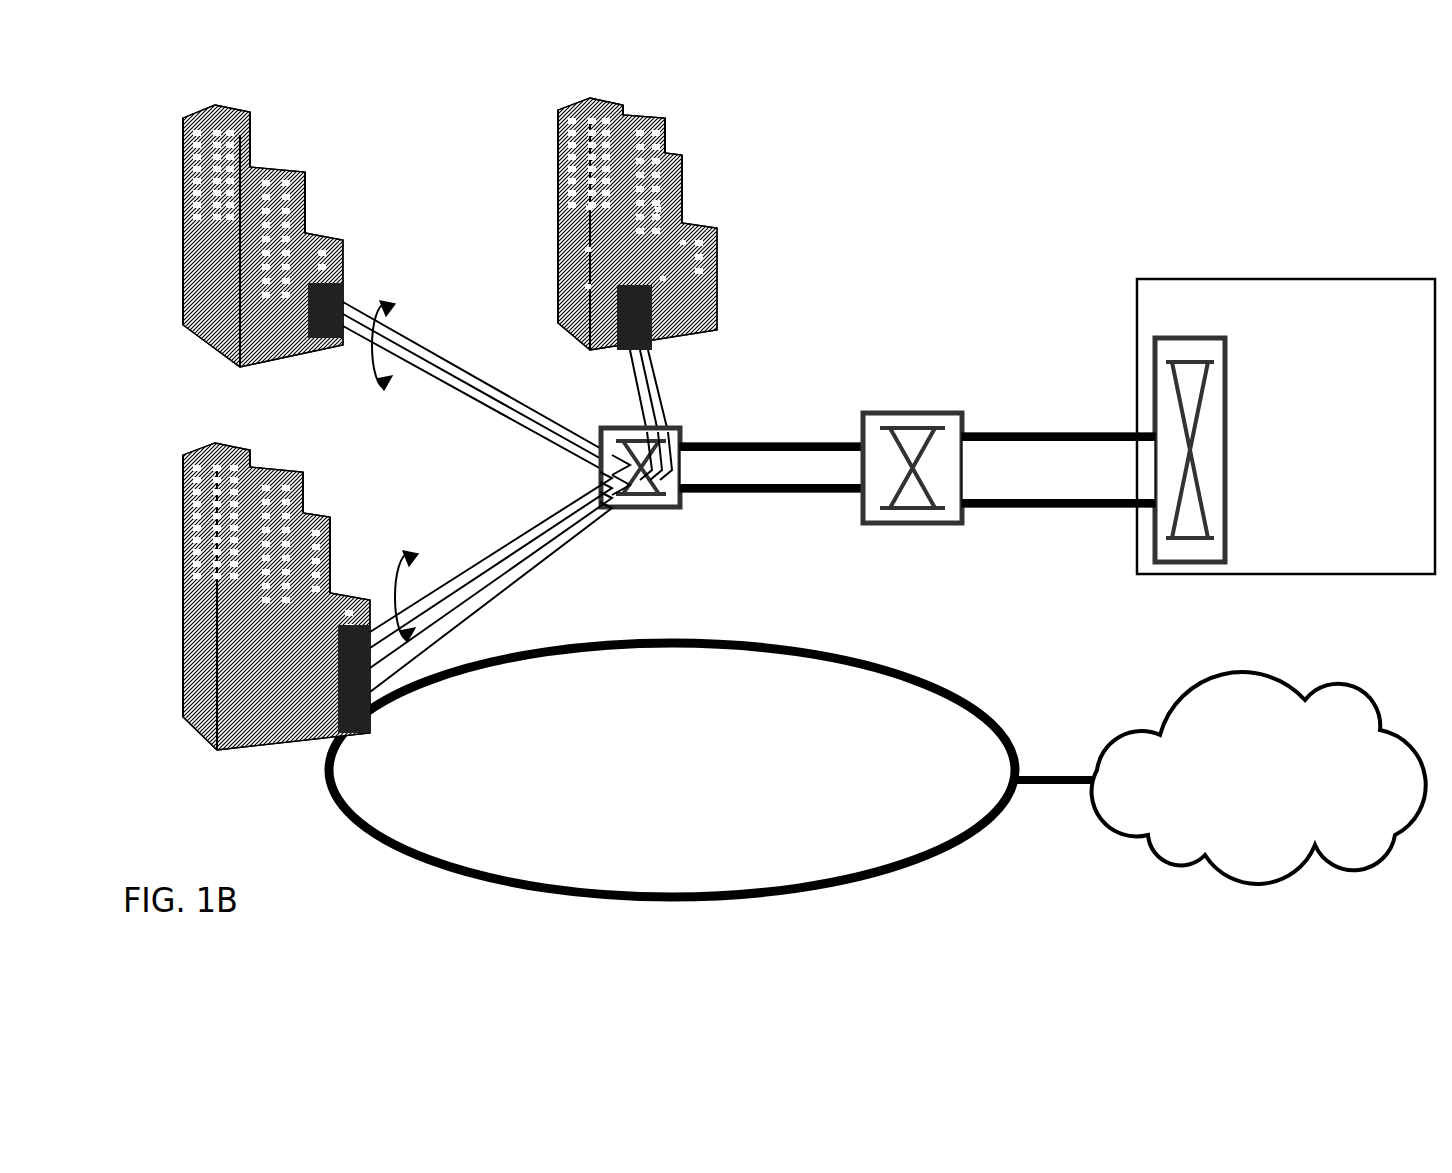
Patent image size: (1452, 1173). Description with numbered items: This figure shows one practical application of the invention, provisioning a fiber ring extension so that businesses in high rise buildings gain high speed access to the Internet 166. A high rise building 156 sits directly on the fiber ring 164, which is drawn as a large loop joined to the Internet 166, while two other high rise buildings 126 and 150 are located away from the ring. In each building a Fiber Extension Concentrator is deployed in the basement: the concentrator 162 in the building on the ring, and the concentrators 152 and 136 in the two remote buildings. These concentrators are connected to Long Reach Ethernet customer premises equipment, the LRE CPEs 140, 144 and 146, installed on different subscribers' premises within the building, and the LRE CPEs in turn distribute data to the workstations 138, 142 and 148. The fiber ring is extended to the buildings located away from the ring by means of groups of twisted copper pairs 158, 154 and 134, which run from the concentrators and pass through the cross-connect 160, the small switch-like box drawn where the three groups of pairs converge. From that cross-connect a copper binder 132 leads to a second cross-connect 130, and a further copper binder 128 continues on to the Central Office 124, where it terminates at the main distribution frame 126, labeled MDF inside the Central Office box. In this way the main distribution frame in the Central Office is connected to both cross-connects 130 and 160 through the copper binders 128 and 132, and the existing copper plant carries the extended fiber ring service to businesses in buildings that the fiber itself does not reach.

The Central Office 124 is at (1255, 282).
The high rise building / main distribution frame (MDF) 126 is at (647, 132).
The copper binder 128 is at (1002, 460).
The cross-connect 130 is at (905, 440).
The copper binder 132 is at (752, 467).
The group of twisted copper pairs 134 is at (650, 392).
The Fiber Extension Concentrator 136 is at (648, 320).
The workstation 138 is at (662, 278).
The LRE CPE 140 is at (588, 287).
The workstation 142 is at (683, 243).
The LRE CPE 144 is at (588, 250).
The LRE CPE 146 is at (590, 208).
The workstation 148 is at (657, 210).
The high rise building 150 is at (285, 133).
The Fiber Extension Concentrator 152 is at (338, 284).
The group of twisted copper pairs 154 is at (424, 358).
The high rise building 156 is at (215, 468).
The group of twisted copper pairs 158 is at (498, 540).
The cross-connect 160 is at (680, 482).
The Fiber Extension Concentrator 162 is at (353, 718).
The fiber ring 164 is at (753, 650).
The Internet 166 is at (1148, 733).